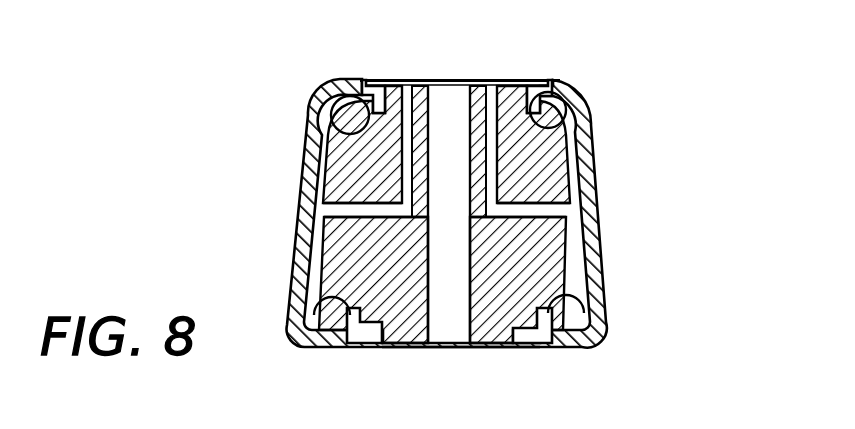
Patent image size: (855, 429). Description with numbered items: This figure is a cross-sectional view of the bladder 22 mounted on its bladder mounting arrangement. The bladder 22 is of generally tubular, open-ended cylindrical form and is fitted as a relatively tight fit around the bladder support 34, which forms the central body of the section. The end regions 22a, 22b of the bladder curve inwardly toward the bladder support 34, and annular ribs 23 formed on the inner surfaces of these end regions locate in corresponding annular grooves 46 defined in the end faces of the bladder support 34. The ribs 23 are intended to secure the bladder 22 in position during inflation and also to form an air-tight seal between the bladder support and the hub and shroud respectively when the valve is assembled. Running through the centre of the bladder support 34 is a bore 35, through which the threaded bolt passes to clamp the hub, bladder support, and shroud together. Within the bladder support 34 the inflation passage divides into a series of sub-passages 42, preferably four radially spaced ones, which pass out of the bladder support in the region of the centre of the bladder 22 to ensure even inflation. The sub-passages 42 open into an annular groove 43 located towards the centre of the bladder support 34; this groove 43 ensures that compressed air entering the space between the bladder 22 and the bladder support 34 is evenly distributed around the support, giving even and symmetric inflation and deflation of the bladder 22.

The bladder 22 is at (598, 233).
The end region of the bladder 22a is at (540, 79).
The end region of the bladder 22b is at (553, 358).
The annular ribs 23 is at (365, 79).
The bladder support 34 is at (545, 272).
The bore in the bladder support 35 is at (449, 120).
The sub-passages 42 is at (407, 153).
The annular groove 43 is at (338, 210).
The annular grooves 46 is at (308, 140).